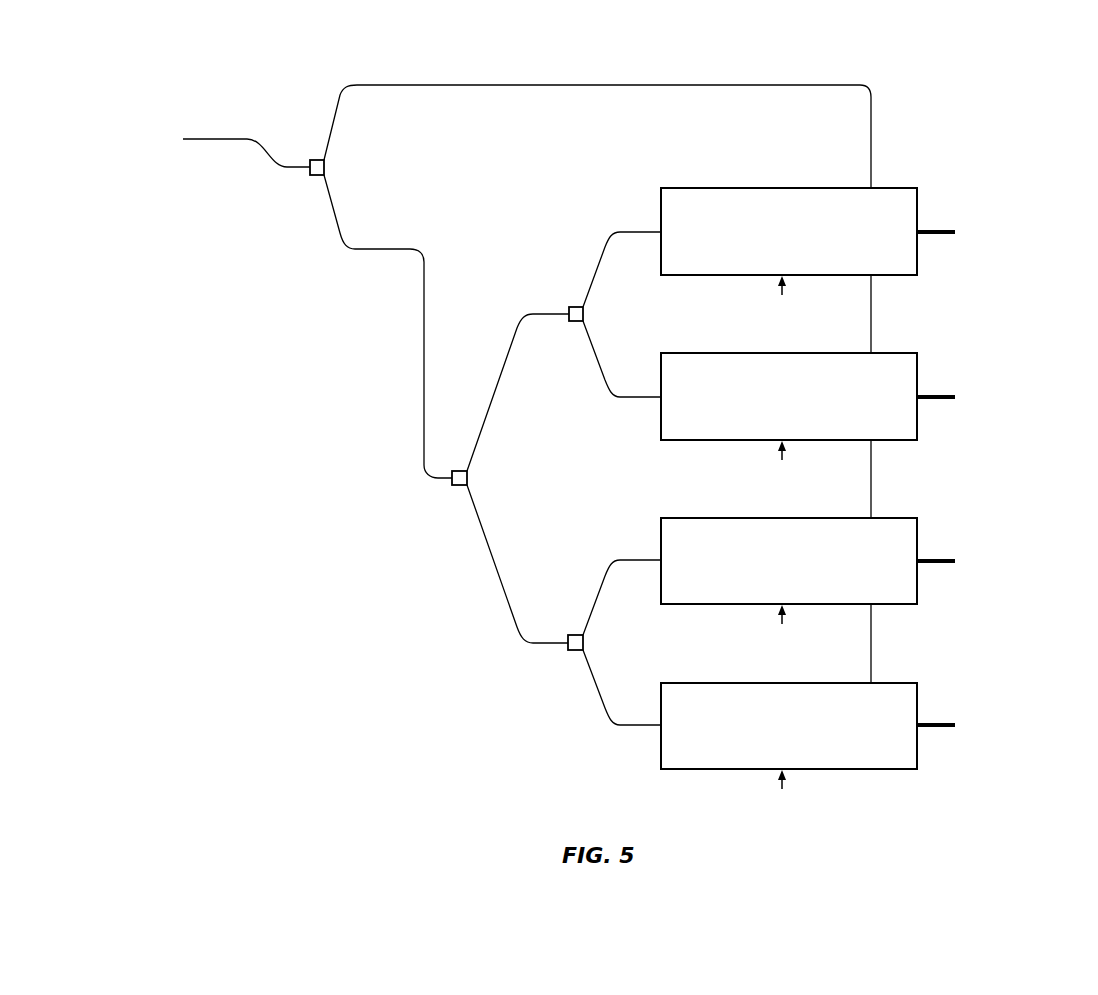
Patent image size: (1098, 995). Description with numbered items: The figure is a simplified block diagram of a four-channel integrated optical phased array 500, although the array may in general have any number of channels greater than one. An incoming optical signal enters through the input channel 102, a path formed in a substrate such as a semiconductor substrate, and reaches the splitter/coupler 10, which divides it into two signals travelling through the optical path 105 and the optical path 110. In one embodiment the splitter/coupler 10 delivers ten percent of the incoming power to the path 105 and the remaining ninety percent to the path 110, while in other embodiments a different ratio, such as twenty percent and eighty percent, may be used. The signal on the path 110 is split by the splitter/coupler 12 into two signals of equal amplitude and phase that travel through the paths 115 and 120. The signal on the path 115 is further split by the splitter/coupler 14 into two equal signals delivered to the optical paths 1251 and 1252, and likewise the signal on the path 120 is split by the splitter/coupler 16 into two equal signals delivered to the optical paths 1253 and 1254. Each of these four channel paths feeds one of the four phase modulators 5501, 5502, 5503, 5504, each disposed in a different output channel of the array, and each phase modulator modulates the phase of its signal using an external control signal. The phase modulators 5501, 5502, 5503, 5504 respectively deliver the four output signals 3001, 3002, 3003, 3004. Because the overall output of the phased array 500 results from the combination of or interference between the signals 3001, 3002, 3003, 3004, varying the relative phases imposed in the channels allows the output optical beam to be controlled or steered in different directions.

The integrated optical phased array 500 is at (1038, 140).
The input channel 102 is at (210, 131).
The splitter/coupler 10 is at (312, 159).
The optical path 105 is at (552, 85).
The optical path 110 is at (424, 330).
The splitter/coupler 12 is at (459, 485).
The optical path 115 is at (495, 387).
The optical path 120 is at (495, 567).
The splitter/coupler 14 is at (570, 307).
The splitter/coupler 16 is at (577, 650).
The optical path 1251 is at (627, 230).
The optical path 1252 is at (623, 398).
The optical path 1253 is at (625, 558).
The optical path 1254 is at (625, 727).
The phase modulator 5501 is at (885, 188).
The phase modulator 5502 is at (885, 353).
The phase modulator 5503 is at (885, 518).
The phase modulator 5504 is at (885, 683).
The output signal 3001 is at (937, 226).
The output signal 3002 is at (937, 391).
The output signal 3003 is at (937, 555).
The output signal 3004 is at (937, 719).